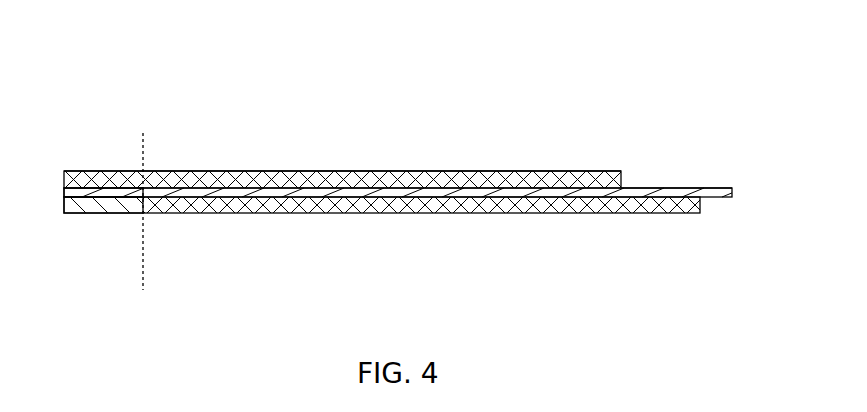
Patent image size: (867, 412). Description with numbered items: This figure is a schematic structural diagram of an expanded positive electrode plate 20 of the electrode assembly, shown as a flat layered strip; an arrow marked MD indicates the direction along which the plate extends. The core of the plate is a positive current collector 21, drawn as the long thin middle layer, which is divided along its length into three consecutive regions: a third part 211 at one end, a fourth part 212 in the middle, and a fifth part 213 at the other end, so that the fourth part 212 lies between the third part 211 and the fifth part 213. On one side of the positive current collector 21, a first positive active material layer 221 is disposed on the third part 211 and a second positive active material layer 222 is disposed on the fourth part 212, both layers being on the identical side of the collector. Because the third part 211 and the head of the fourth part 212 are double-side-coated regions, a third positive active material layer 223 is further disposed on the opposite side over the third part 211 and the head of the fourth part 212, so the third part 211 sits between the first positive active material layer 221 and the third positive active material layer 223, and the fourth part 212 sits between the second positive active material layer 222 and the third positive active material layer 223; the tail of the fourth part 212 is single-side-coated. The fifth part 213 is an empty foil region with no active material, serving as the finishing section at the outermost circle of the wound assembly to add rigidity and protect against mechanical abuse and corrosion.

The positive electrode plate 20 is at (313, 50).
The machine direction MD is at (290, 95).
The positive current collector 21 is at (733, 190).
The third part 211 is at (113, 186).
The fourth part 212 is at (344, 184).
The fifth part 213 is at (712, 184).
The first positive active material layer 221 is at (98, 215).
The second positive active material layer 222 is at (348, 216).
The third positive active material layer 223 is at (200, 169).